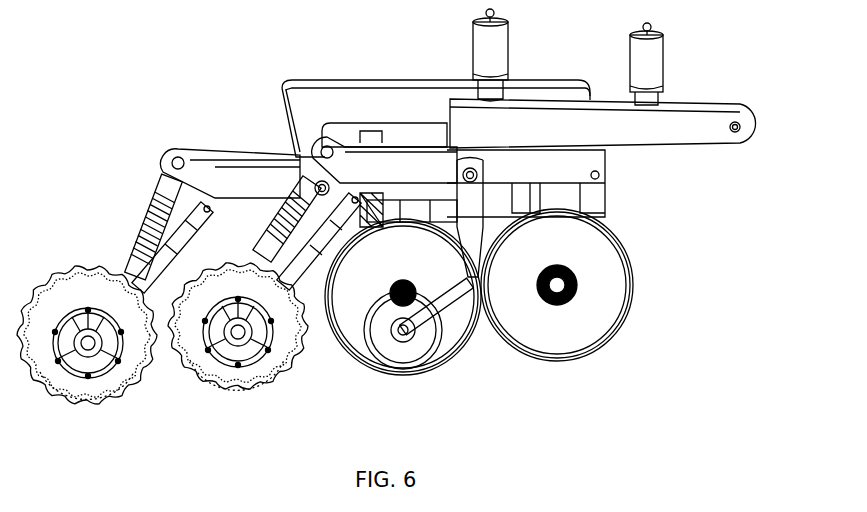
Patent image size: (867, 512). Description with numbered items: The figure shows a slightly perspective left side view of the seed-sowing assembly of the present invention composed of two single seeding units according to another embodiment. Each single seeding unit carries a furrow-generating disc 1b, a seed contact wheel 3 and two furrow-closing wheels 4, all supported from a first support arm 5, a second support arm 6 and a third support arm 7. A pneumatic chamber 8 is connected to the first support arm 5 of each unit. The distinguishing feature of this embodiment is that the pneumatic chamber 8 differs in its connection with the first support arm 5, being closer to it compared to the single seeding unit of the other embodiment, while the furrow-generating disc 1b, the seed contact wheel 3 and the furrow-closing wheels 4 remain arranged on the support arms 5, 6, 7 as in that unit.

The furrow-generating disc 1b is at (453, 333).
The seed contact wheel 3 is at (395, 350).
The furrow-closing wheel 4 is at (133, 360).
The first support arm 5 is at (323, 103).
The second support arm 6 is at (245, 182).
The third support arm 7 is at (315, 238).
The pneumatic chamber 8 is at (480, 52).